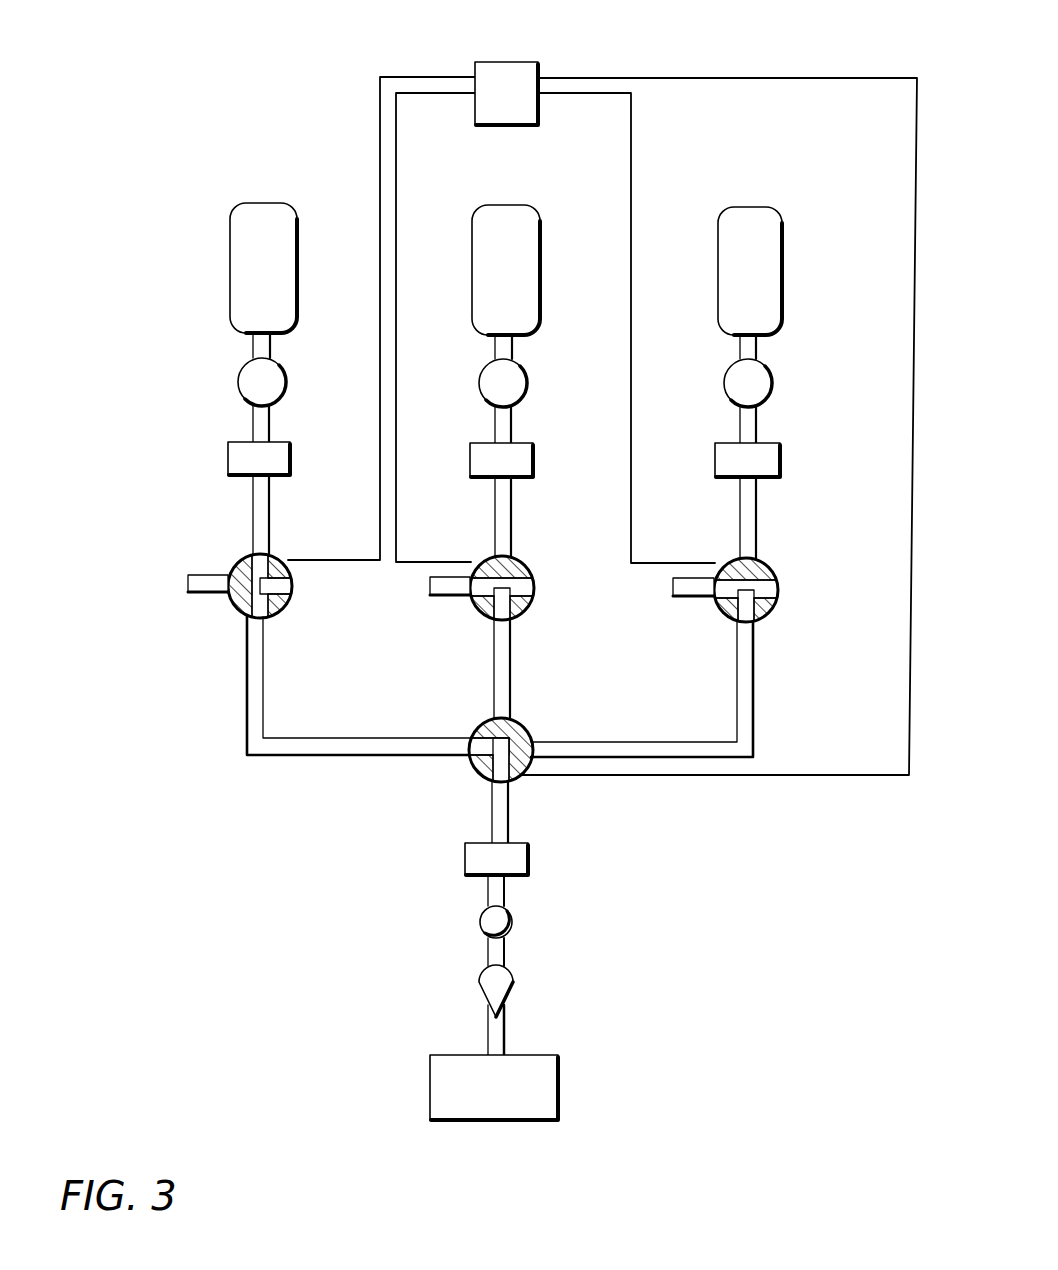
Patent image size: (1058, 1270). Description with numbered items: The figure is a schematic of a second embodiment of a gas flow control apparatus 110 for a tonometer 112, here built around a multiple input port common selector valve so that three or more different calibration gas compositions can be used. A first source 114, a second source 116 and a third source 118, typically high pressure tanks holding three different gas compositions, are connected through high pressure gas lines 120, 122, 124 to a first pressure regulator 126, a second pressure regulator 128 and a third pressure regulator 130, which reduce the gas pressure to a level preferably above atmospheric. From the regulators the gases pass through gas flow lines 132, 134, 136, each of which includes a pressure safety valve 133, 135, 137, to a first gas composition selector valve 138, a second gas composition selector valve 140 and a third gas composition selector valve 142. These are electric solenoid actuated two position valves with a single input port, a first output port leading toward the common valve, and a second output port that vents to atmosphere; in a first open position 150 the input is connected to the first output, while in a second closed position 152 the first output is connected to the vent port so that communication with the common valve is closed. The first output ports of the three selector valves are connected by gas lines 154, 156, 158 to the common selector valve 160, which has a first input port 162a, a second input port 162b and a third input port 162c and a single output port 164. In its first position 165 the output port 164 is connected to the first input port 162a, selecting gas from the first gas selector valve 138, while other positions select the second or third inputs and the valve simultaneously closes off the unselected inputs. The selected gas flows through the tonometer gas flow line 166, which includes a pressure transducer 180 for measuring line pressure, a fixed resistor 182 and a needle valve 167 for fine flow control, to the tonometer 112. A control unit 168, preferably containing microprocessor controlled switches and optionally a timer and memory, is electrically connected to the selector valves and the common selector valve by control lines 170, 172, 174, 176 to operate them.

The gas flow control apparatus 110 is at (222, 65).
The tonometer 112 is at (530, 1055).
The first source 114 is at (230, 285).
The second source 116 is at (540, 235).
The third source 118 is at (783, 236).
The high pressure gas line 120 is at (253, 347).
The high pressure gas line 122 is at (495, 353).
The high pressure gas line 124 is at (738, 350).
The first pressure regulator 126 is at (228, 456).
The second pressure regulator 128 is at (534, 458).
The third pressure regulator 130 is at (715, 460).
The gas flow line 132 is at (253, 528).
The pressure safety valve 133 is at (238, 382).
The gas flow line 134 is at (511, 530).
The pressure safety valve 135 is at (528, 370).
The gas flow line 136 is at (757, 533).
The pressure safety valve 137 is at (725, 382).
The first gas composition selector valve 138 is at (234, 608).
The second gas composition selector valve 140 is at (485, 585).
The third gas composition selector valve 142 is at (730, 586).
The first open position 150 is at (242, 598).
The second closed position 152 is at (526, 566).
The gas line 154 is at (338, 758).
The gas line 156 is at (512, 655).
The gas line 158 is at (754, 697).
The common selector valve 160 is at (520, 777).
The first input port 162a is at (467, 740).
The second input port 162b is at (490, 718).
The third input port 162c is at (529, 738).
The output port 164 is at (488, 785).
The first position 165 is at (522, 776).
The tonometer gas flow line 166 is at (488, 812).
The needle valve 167 is at (481, 990).
The control unit 168 is at (515, 62).
The control line 170 is at (420, 77).
The control line 172 is at (397, 167).
The control line 174 is at (632, 167).
The control line 176 is at (760, 78).
The pressure transducer 180 is at (465, 860).
The fixed resistor 182 is at (480, 924).